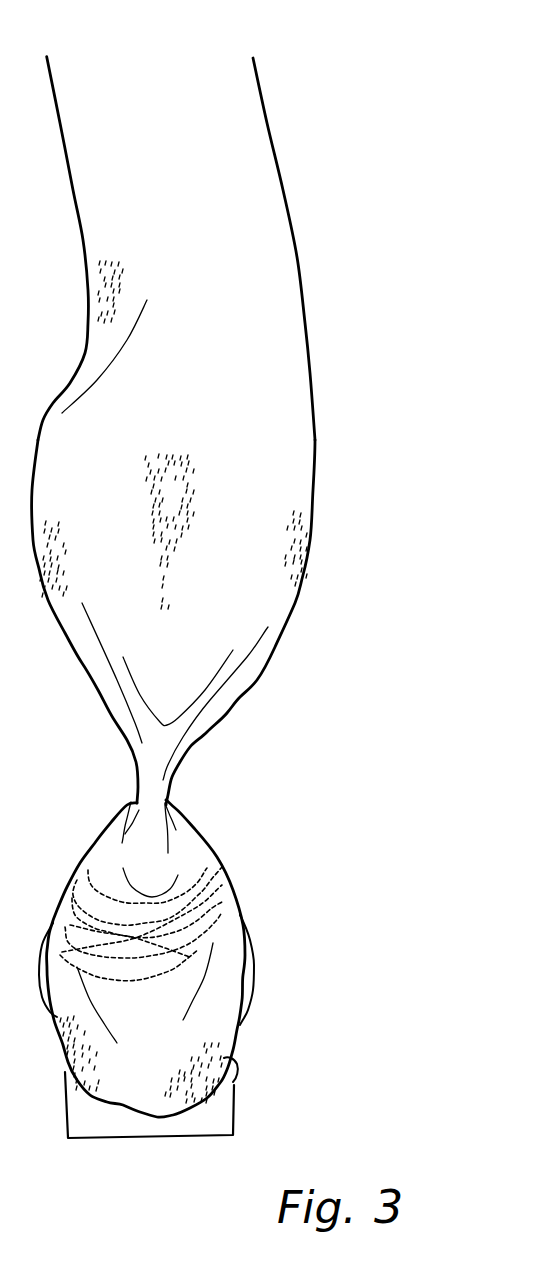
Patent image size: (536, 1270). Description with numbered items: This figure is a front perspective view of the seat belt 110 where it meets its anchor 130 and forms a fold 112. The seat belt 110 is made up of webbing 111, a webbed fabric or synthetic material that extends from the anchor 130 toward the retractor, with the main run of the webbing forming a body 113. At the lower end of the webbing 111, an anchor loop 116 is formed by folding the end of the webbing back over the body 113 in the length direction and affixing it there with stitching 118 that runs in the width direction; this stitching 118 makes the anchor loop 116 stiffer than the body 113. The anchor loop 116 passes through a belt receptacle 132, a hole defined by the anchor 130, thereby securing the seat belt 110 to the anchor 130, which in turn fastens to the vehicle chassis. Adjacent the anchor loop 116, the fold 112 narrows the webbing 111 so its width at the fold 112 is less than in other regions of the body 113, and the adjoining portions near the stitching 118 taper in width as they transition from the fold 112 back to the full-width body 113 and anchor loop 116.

The seat belt 110 is at (333, 92).
The webbing 111 is at (273, 605).
The fold 112 is at (150, 795).
The body 113 is at (297, 393).
The anchor loop 116 is at (193, 1030).
The stitching 118 is at (200, 903).
The anchor 130 is at (188, 1143).
The belt receptacle 132 is at (237, 1080).